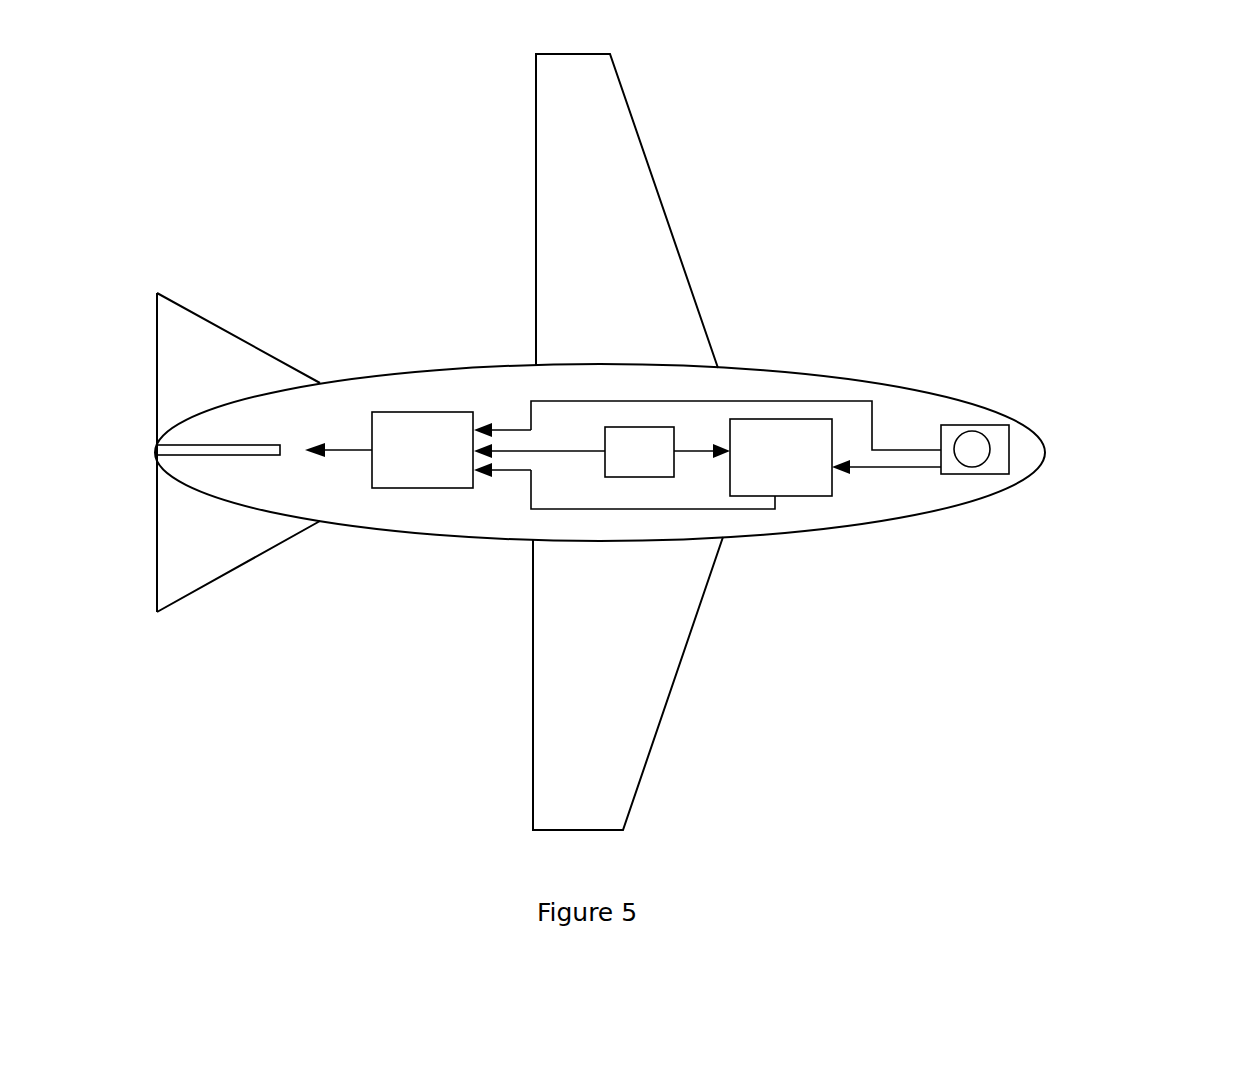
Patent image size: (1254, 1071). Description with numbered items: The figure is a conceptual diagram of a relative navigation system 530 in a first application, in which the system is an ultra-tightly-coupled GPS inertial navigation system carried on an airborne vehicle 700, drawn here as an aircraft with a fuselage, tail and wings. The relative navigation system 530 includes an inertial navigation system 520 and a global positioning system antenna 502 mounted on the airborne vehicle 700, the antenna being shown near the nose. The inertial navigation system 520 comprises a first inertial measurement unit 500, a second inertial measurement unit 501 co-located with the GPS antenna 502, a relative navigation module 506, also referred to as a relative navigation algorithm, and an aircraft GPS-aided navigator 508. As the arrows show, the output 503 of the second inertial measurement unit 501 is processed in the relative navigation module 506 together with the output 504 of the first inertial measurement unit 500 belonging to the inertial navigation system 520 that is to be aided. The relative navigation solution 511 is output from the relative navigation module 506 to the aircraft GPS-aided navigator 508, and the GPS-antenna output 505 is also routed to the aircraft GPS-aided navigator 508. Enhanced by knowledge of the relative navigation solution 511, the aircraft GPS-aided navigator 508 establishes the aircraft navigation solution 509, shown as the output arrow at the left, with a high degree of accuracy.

The first inertial measurement unit 500 is at (668, 478).
The second inertial measurement unit 501 is at (1098, 399).
The global positioning system antenna 502 is at (1120, 547).
The output of the second inertial measurement unit 503 is at (929, 467).
The output of the inertial measurement unit 504 is at (598, 447).
The GPS-antenna output 505 is at (680, 401).
The relative navigation module 506 is at (790, 497).
The aircraft global positioning system-aided navigator 508 is at (461, 490).
The aircraft navigation solution 509 is at (338, 480).
The relative navigation solution 511 is at (587, 512).
The inertial navigation system 520 is at (446, 393).
The relative navigation system 530 is at (684, 816).
The airborne vehicle 700 is at (531, 636).